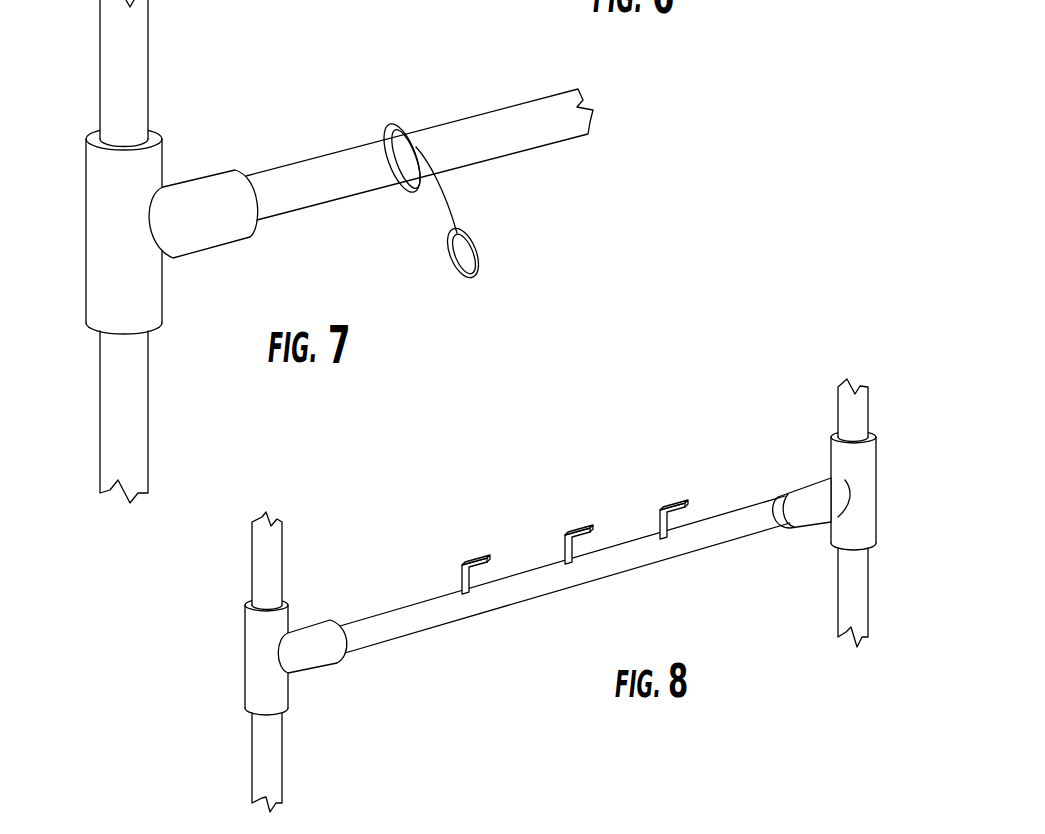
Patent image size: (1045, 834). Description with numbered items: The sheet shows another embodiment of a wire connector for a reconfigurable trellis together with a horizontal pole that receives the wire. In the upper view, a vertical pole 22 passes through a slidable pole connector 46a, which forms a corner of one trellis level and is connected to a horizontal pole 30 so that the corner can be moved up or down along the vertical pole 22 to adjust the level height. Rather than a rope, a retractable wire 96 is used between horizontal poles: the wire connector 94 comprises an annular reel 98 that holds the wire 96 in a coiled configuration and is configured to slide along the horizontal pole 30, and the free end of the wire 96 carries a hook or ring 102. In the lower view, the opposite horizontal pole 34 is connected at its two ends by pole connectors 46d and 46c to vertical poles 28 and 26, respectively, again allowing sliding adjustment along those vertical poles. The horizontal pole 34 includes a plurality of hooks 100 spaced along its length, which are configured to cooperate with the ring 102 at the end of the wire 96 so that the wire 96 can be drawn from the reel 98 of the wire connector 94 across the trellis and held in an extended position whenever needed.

In FIG. 7, the vertical pole 22 is at (113, 107).
In FIG. 7, the slidable pole connector 46a is at (107, 262).
In FIG. 7, the horizontal pole 30 is at (486, 122).
In FIG. 7, the retaining ring 94 is at (383, 124).
In FIG. 7, the annular reel 98 is at (403, 190).
In FIG. 7, the wire 96 is at (447, 192).
In FIG. 7, the ring 102 is at (478, 269).
In FIG. 8, the vertical pole 28 is at (267, 570).
In FIG. 8, the slidable pole connector 46d is at (258, 658).
In FIG. 8, the horizontal pole 34 is at (497, 602).
In FIG. 8, the hooks 100 is at (473, 560).
In FIG. 8, the vertical pole 26 is at (860, 413).
In FIG. 8, the slidable pole connector 46c is at (867, 507).